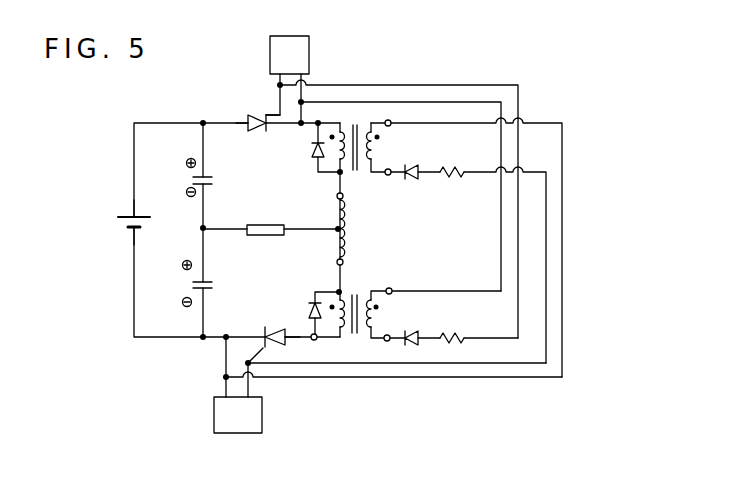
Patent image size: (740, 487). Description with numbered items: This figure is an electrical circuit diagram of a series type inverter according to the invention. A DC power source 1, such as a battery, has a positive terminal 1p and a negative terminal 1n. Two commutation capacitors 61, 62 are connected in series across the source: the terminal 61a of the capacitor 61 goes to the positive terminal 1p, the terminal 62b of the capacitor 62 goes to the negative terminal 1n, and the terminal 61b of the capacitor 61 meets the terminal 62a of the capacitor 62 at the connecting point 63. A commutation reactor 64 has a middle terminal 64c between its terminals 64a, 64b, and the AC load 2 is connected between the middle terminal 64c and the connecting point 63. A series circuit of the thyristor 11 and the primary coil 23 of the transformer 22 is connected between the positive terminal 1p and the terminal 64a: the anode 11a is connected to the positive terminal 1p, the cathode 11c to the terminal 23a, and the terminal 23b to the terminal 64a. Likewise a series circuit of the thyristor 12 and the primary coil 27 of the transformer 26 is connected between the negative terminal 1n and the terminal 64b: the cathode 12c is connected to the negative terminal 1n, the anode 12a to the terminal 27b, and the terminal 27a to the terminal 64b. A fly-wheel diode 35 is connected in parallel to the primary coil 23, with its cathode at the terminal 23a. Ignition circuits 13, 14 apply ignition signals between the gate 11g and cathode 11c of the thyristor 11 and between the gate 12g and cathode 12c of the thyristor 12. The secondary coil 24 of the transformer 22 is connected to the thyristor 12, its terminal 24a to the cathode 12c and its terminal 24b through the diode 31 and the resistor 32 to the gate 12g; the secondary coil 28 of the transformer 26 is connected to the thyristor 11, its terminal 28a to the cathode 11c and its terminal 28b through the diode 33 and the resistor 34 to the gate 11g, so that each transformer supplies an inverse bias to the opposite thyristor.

The DC power source 1 is at (130, 226).
The positive terminal 1p is at (133, 208).
The negative terminal 1n is at (133, 246).
The AC load 2 is at (265, 236).
The thyristor 11 is at (246, 115).
The anode 11a is at (236, 121).
The cathode 11c is at (270, 133).
The gate 11g is at (276, 112).
The thyristor 12 is at (274, 335).
The anode 12a is at (298, 351).
The cathode 12c is at (254, 335).
The gate 12g is at (269, 357).
The ignition circuit 13 is at (309, 52).
The ignition circuit 14 is at (262, 415).
The transformer 22 is at (355, 137).
The primary coil 23 is at (337, 160).
The terminal 23a is at (319, 118).
The terminal 23b is at (338, 174).
The secondary coil 24 is at (376, 142).
The terminal 24a is at (388, 120).
The terminal 24b is at (390, 169).
The transformer 26 is at (360, 301).
The primary coil 27 is at (312, 302).
The terminal 27a is at (337, 290).
The terminal 27b is at (316, 341).
The secondary coil 28 is at (397, 282).
The terminal 28a is at (415, 280).
The terminal 28b is at (389, 343).
The diode 31 is at (415, 167).
The resistor 32 is at (456, 170).
The diode 33 is at (408, 330).
The resistor 34 is at (453, 333).
The fly-wheel diode 35 is at (312, 152).
The commutation capacitor 61 is at (206, 177).
The terminal 61a is at (204, 157).
The terminal 61b is at (204, 198).
The commutation capacitor 62 is at (203, 285).
The terminal 62a is at (204, 270).
The terminal 62b is at (204, 300).
The connecting point 63 is at (205, 232).
The commutation reactor 64 is at (342, 225).
The terminal 64a is at (344, 196).
The terminal 64b is at (344, 262).
The middle terminal 64c is at (356, 224).